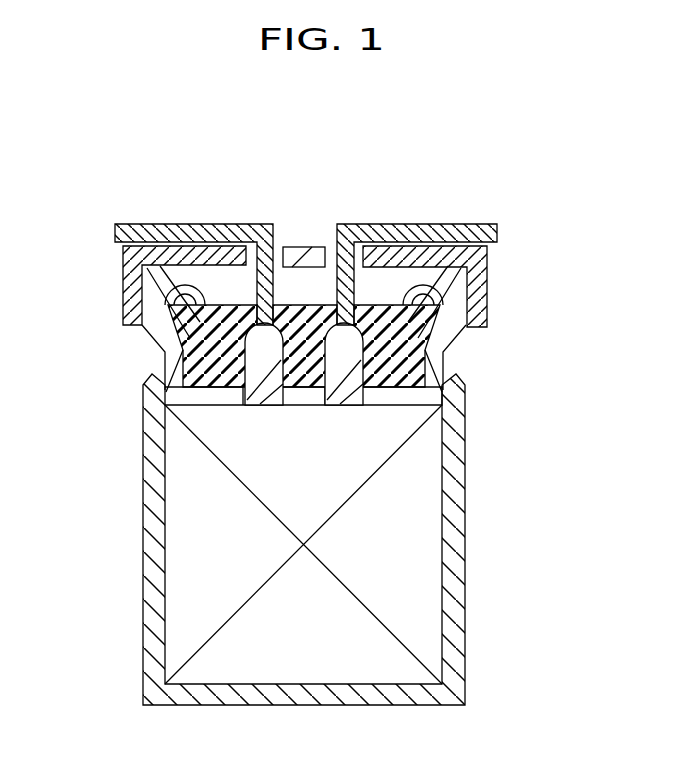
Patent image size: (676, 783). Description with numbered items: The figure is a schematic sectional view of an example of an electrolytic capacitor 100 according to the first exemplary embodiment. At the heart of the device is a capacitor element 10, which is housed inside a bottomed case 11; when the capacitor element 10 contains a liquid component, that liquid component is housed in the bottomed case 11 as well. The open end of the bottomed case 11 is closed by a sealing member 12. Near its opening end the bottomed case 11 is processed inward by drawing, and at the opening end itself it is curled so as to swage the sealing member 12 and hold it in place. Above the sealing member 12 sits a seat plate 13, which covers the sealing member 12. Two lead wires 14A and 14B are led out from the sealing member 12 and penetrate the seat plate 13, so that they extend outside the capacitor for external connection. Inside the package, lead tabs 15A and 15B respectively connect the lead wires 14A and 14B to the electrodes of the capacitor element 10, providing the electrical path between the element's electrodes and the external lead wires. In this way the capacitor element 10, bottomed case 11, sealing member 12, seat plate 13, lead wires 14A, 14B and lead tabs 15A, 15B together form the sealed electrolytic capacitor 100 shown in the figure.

The electrolytic capacitor 100 is at (80, 168).
The capacitor element 10 is at (205, 521).
The bottomed case 11 is at (457, 494).
The sealing member 12 is at (400, 353).
The seat plate 13 is at (133, 268).
The lead wire 14A is at (190, 224).
The lead wire 14B is at (425, 224).
The lead tab 15A is at (263, 355).
The lead tab 15B is at (345, 376).